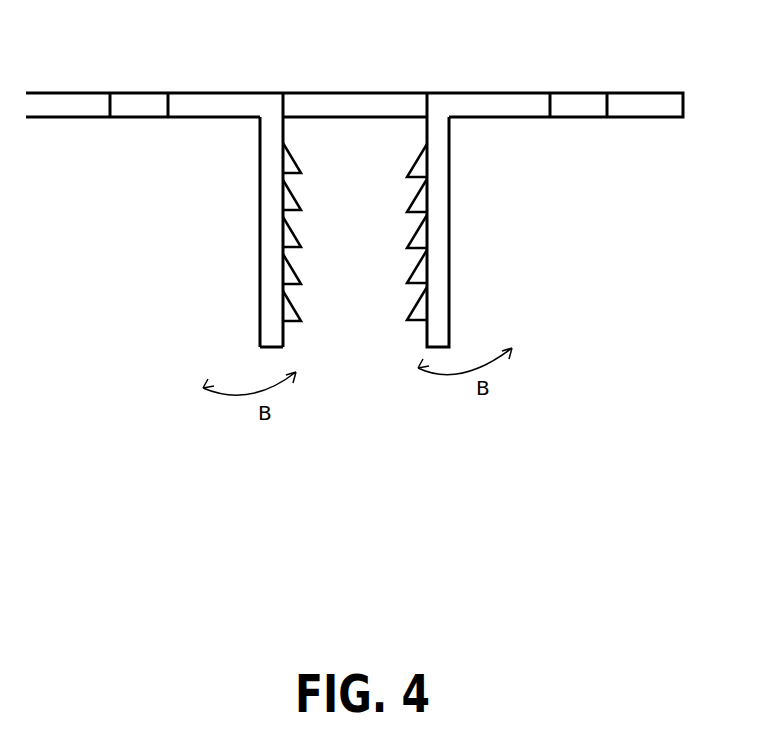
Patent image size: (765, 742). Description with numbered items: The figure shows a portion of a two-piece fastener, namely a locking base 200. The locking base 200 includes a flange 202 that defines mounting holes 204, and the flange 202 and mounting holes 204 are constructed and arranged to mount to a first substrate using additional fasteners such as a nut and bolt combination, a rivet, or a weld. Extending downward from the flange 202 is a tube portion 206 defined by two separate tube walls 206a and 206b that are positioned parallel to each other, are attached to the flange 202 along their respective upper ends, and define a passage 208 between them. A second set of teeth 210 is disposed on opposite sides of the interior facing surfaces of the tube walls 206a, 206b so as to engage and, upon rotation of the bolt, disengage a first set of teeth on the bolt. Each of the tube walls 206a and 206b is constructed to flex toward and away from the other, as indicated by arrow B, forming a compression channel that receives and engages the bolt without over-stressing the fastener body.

The locking base 200 is at (624, 54).
The flange 202 is at (645, 107).
The mounting holes 204 is at (127, 110).
The tube portion 206 is at (306, 230).
The tube wall 206a is at (264, 228).
The tube wall 206b is at (440, 225).
The passage 208 is at (285, 332).
The second set of teeth 210 is at (298, 172).